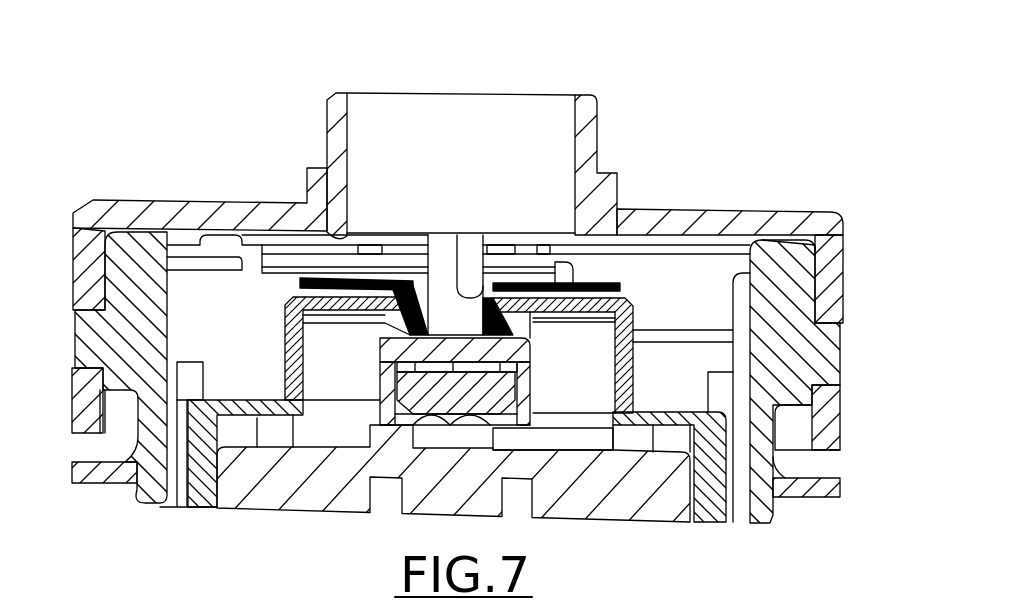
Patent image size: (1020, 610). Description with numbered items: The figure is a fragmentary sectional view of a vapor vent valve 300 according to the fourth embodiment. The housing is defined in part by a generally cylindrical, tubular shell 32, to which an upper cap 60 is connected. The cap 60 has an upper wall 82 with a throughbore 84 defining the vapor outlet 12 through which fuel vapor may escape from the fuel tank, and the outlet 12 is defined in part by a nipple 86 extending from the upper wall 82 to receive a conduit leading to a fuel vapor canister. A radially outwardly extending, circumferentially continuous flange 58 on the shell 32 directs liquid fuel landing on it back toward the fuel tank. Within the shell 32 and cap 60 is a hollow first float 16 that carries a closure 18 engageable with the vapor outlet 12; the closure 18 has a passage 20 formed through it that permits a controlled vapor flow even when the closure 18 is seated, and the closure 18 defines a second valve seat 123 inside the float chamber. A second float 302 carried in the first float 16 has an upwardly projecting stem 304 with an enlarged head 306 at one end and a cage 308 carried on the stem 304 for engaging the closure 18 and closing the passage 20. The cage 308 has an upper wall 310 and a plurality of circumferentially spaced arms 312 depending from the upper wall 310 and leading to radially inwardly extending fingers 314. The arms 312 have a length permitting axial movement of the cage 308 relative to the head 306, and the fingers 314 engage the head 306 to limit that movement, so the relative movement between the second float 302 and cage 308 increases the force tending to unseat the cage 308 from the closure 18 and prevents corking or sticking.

The vapor vent valve 300 is at (688, 77).
The vapor outlet 12 is at (480, 130).
The throughbore 84 is at (350, 146).
The nipple 86 is at (596, 125).
The upper cap 60 is at (683, 208).
The upper wall 82 is at (745, 213).
The passage 20 is at (460, 237).
The closure 18 is at (515, 285).
The first float 16 is at (633, 378).
The upper wall 310 is at (290, 324).
The second valve seat 123 is at (393, 355).
The cage 308 is at (531, 355).
The enlarged head 306 is at (410, 386).
The arms 312 is at (530, 395).
The fingers 314 is at (451, 437).
The stem 304 is at (318, 508).
The second float 302 is at (608, 506).
The flange 58 is at (838, 487).
The shell 32 is at (772, 511).